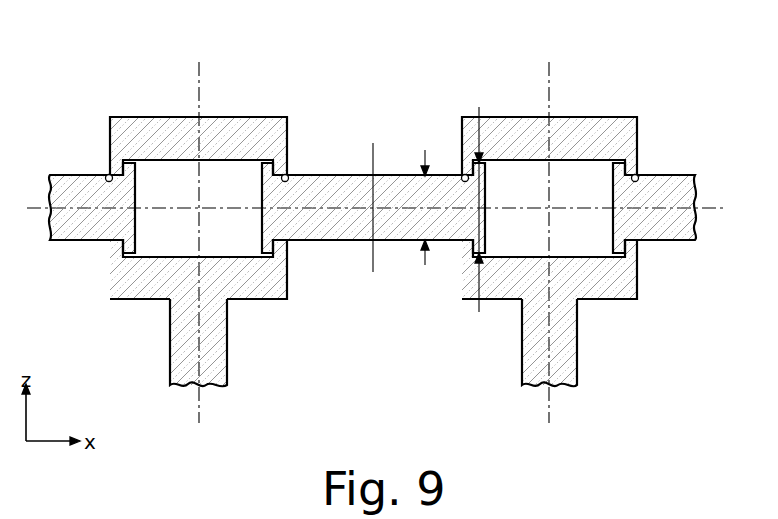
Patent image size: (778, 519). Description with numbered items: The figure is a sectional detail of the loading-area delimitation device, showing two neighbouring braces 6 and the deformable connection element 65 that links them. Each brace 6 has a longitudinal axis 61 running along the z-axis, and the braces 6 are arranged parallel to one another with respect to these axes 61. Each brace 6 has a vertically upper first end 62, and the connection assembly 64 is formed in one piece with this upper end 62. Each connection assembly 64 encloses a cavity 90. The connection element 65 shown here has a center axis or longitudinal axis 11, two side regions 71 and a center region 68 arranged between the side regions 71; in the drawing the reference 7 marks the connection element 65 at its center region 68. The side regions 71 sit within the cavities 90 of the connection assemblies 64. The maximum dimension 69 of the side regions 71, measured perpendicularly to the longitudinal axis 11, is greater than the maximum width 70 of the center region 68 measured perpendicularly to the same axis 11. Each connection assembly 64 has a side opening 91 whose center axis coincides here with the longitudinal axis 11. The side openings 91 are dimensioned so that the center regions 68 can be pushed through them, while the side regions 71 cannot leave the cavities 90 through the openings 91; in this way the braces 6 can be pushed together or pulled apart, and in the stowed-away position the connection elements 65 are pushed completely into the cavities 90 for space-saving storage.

The brace 6 is at (212, 338).
The shaft section 7 is at (328, 198).
The longitudinal axis 11 is at (718, 206).
The longitudinal axis 61 is at (205, 403).
The first end 62 is at (145, 108).
The connection assembly 64 is at (510, 138).
The connection element 65 is at (412, 184).
The center region 68 is at (330, 207).
The maximum dimension 69 is at (479, 312).
The maximum width 70 is at (425, 265).
The side region 71 is at (478, 158).
The cavity 90 is at (592, 253).
The side opening 91 is at (108, 175).